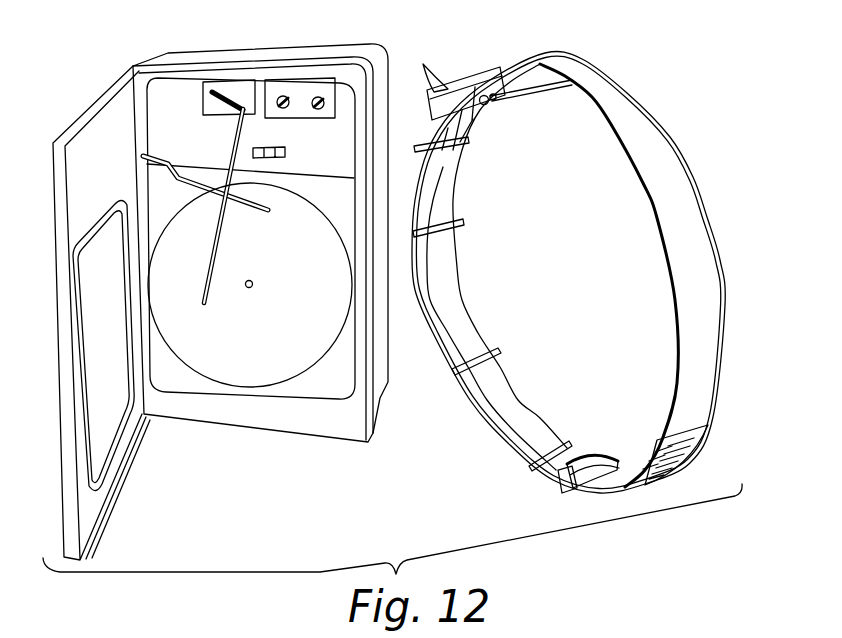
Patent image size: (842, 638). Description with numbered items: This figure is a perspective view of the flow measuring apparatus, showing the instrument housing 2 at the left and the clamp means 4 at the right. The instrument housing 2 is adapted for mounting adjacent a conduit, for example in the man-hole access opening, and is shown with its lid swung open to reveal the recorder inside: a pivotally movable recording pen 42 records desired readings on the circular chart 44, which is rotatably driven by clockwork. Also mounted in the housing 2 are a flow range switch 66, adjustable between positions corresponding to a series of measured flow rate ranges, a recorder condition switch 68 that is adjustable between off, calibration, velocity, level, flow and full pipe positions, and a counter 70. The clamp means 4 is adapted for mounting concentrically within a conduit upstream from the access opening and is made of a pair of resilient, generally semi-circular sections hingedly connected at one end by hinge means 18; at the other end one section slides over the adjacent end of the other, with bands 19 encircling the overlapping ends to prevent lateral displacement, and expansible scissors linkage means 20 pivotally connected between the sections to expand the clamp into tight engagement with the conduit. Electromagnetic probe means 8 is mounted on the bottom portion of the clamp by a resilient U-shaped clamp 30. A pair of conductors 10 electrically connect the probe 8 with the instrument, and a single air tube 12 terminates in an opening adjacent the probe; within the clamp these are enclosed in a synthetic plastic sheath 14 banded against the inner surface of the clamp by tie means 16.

The instrument housing 2 is at (381, 396).
The clamp means 4 is at (712, 179).
The electromagnetic probe means 8 is at (592, 462).
The conductors 10 is at (470, 125).
The single tube 12 is at (476, 108).
The synthetic plastic sheath 14 is at (470, 300).
The tie means 16 is at (420, 140).
The hinge means 18 is at (662, 438).
The bands 19 is at (426, 57).
The expansible scissors linkage means 20 is at (502, 82).
The resilient U-shaped clamp 30 is at (560, 488).
The recording pen 42 is at (218, 244).
The chart 44 is at (216, 372).
The flow range switch 66 is at (286, 96).
The recorder condition switch 68 is at (321, 97).
The counter 70 is at (288, 157).